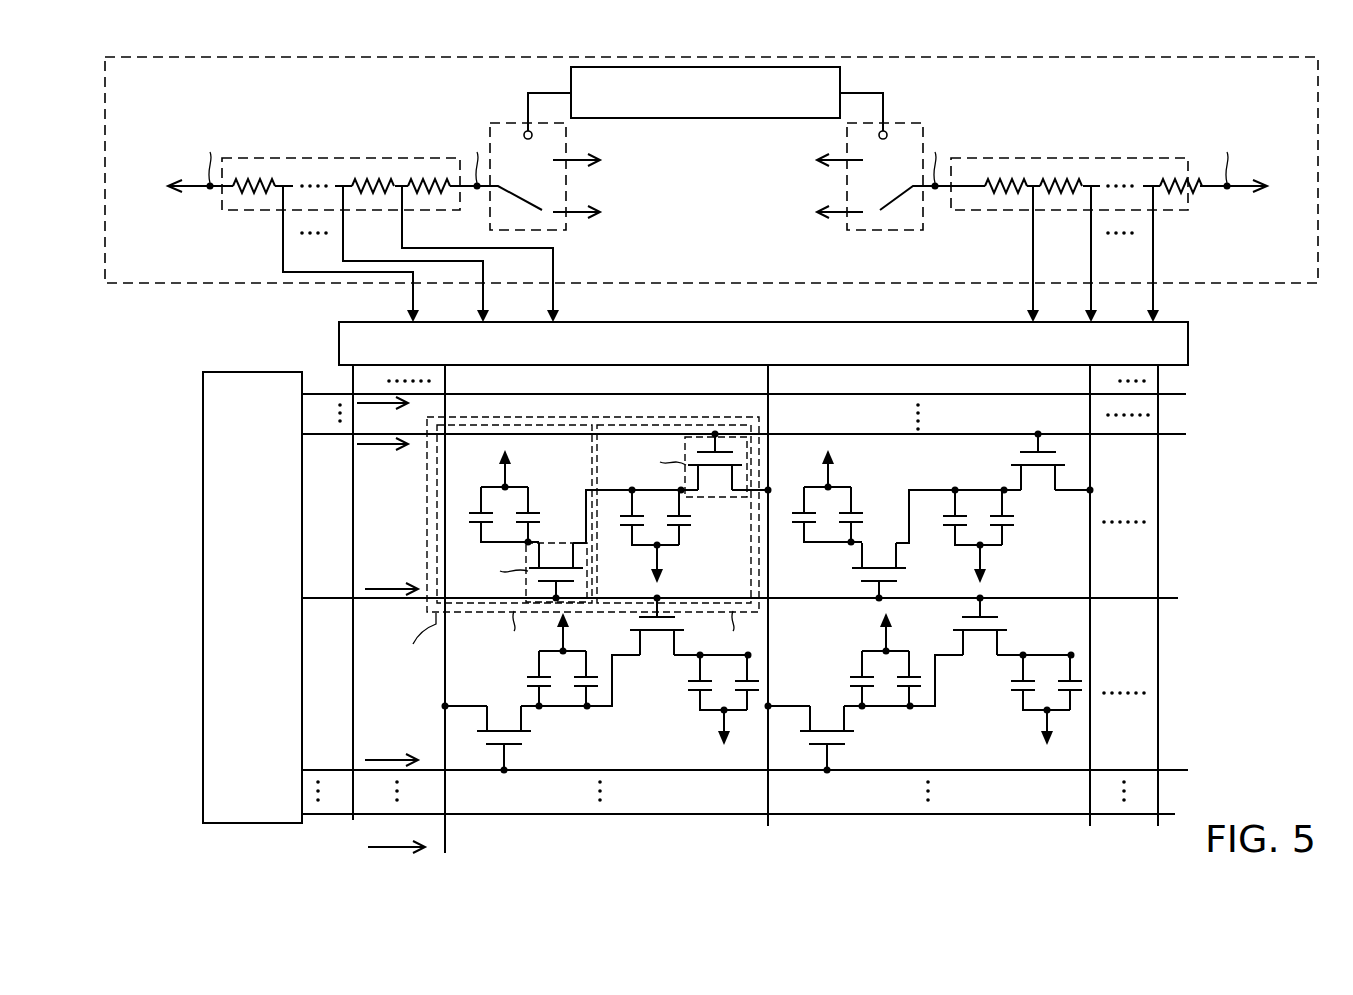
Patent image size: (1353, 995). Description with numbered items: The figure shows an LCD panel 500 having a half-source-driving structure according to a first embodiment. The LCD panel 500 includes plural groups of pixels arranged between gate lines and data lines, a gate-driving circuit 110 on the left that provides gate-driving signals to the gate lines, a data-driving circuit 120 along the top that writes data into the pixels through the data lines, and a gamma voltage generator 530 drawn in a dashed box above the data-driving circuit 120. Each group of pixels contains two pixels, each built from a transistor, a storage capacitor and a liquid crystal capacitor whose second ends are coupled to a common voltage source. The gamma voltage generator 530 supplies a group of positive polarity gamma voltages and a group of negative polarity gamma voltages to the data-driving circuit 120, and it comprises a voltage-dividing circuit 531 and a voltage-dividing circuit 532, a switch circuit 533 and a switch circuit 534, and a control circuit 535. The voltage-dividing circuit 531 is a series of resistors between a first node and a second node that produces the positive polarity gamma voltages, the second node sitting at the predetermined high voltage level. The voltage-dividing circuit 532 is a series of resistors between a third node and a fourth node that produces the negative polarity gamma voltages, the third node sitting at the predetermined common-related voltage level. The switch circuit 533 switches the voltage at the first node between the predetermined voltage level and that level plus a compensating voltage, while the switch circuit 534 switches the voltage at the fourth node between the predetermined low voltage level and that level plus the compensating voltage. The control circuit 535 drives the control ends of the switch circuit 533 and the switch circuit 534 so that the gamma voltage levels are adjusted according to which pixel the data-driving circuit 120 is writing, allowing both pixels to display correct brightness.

The gate-driving circuit 110 is at (273, 372).
The data-driving circuit 120 is at (1188, 349).
The LCD panel 500 is at (1203, 715).
The gamma voltage generator 530 is at (160, 284).
The voltage-dividing circuit 531 is at (1070, 158).
The voltage-dividing circuit 532 is at (340, 158).
The switch circuit 533 is at (918, 122).
The switch circuit 534 is at (491, 122).
The control circuit 535 is at (706, 119).